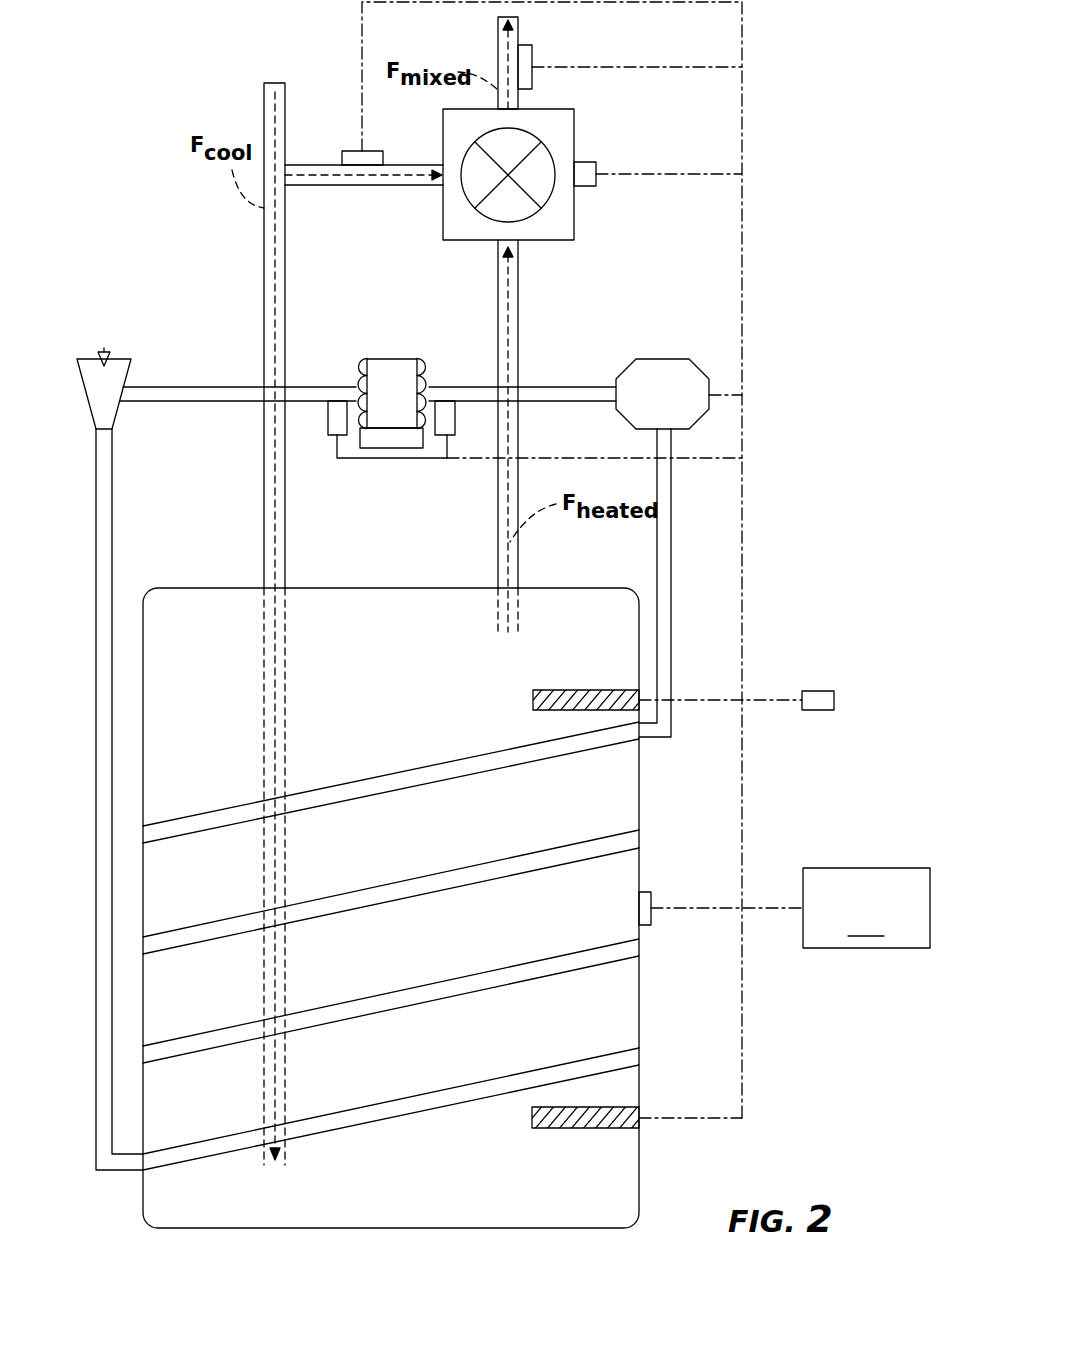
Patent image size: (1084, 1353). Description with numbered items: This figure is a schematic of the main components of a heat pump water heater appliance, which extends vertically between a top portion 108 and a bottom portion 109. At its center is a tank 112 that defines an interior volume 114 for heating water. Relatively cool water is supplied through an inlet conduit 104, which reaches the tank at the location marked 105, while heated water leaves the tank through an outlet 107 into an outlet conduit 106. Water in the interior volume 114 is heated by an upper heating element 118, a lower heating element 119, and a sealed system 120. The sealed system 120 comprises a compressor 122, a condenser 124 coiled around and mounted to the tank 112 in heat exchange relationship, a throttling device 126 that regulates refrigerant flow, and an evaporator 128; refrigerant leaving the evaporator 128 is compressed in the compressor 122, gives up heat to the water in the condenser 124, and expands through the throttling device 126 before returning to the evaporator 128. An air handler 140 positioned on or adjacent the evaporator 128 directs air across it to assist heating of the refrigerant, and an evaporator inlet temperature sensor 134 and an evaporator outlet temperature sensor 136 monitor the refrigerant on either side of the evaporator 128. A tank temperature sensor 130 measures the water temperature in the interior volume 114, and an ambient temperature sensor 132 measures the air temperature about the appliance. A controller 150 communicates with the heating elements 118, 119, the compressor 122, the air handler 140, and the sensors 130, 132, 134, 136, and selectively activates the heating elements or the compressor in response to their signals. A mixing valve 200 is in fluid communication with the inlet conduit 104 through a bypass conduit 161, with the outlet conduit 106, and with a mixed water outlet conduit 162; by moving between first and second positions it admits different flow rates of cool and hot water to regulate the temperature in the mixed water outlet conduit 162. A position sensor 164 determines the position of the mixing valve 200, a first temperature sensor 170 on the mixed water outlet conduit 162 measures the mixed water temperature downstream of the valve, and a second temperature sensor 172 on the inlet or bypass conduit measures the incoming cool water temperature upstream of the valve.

The inlet conduit 104 is at (264, 325).
The cool fluid inlet 105 is at (285, 588).
The outlet conduit 106 is at (498, 322).
The outlet 107 is at (518, 588).
The top portion 108 is at (130, 581).
The bottom portion 109 is at (143, 1232).
The tank 112 is at (639, 808).
The interior volume 114 is at (363, 650).
The upper heating element 118 is at (533, 700).
The lower heating element 119 is at (532, 1118).
The sealed system 120 is at (654, 343).
The compressor 122 is at (620, 365).
The condenser 124 is at (400, 880).
The throttling device 126 is at (131, 364).
The evaporator 128 is at (385, 359).
The tank temperature sensor 130 is at (651, 895).
The ambient temperature sensor 132 is at (822, 691).
The evaporator inlet temperature sensor 134 is at (328, 445).
The evaporator outlet temperature sensor 136 is at (455, 445).
The air handler 140 is at (385, 448).
The controller 150 is at (866, 908).
The bypass conduit 161 is at (363, 186).
The mixed water outlet conduit 162 is at (498, 30).
The position sensor 164 is at (596, 168).
The first temperature sensor 170 is at (532, 60).
The second temperature sensor 172 is at (342, 152).
The mixing valve 200 is at (565, 240).